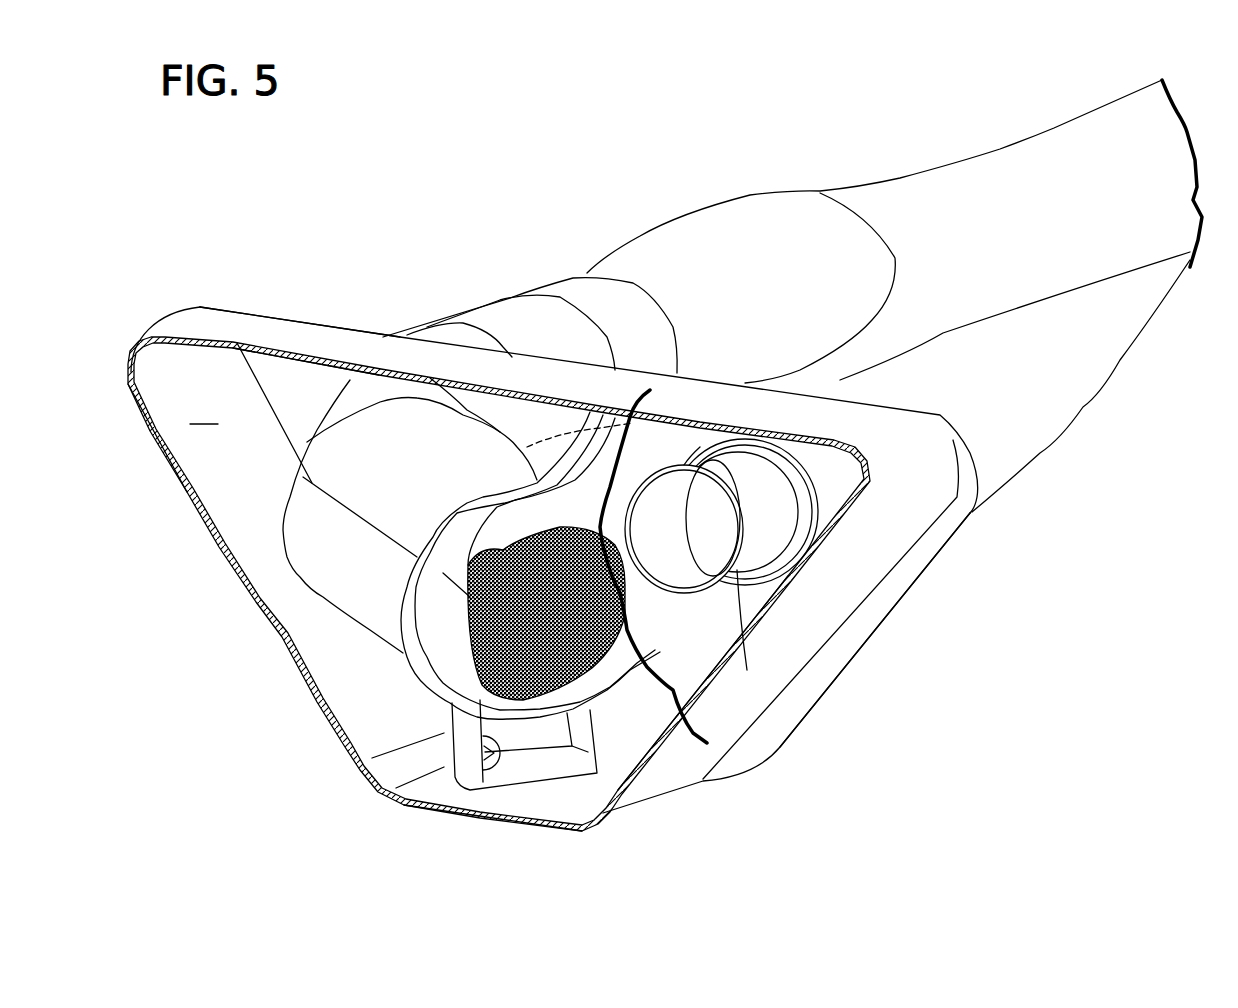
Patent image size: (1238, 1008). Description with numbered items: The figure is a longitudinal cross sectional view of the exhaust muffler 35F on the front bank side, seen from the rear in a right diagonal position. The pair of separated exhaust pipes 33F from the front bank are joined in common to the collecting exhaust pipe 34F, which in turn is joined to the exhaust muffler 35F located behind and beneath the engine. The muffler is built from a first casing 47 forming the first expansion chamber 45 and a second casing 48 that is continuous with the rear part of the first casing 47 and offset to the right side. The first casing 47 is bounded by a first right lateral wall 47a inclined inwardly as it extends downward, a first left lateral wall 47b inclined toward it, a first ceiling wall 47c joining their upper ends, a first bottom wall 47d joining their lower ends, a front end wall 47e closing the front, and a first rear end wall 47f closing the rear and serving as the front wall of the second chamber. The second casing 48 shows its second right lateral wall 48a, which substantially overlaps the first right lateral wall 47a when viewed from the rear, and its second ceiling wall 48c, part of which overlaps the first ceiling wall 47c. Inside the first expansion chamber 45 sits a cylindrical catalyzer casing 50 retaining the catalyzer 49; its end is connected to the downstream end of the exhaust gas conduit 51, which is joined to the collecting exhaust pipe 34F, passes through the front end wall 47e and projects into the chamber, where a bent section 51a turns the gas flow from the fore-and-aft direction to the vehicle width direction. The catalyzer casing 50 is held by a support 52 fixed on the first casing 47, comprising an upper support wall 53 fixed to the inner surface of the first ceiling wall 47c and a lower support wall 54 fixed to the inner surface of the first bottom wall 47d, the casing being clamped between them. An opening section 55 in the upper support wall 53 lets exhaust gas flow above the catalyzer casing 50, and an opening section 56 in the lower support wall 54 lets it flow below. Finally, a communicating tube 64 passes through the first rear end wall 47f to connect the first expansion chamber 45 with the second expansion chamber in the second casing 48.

The separated exhaust pipes 33F is at (1083, 233).
The collecting exhaust pipe 34F is at (541, 280).
The exhaust muffler 35F is at (207, 305).
The first expansion chamber 45 is at (205, 412).
The first casing 47 is at (953, 428).
The first right lateral wall 47a is at (827, 623).
The first left lateral wall 47b is at (233, 567).
The first ceiling wall 47c is at (387, 345).
The first bottom wall 47d is at (530, 827).
The front end wall 47e is at (270, 380).
The first rear end wall 47f is at (693, 643).
The second casing 48 is at (727, 430).
The second right lateral wall 48a is at (825, 545).
The second ceiling wall 48c is at (832, 353).
The catalyzer 49 is at (490, 657).
The catalyzer casing 50 is at (377, 597).
The exhaust gas conduit 51 is at (462, 337).
The bent section 51a is at (310, 437).
The support 52 is at (465, 504).
The upper support wall 53 is at (553, 457).
The lower support wall 54 is at (510, 780).
The opening section 55 is at (623, 443).
The opening section 56 is at (480, 790).
The communicating tube 64 is at (743, 636).